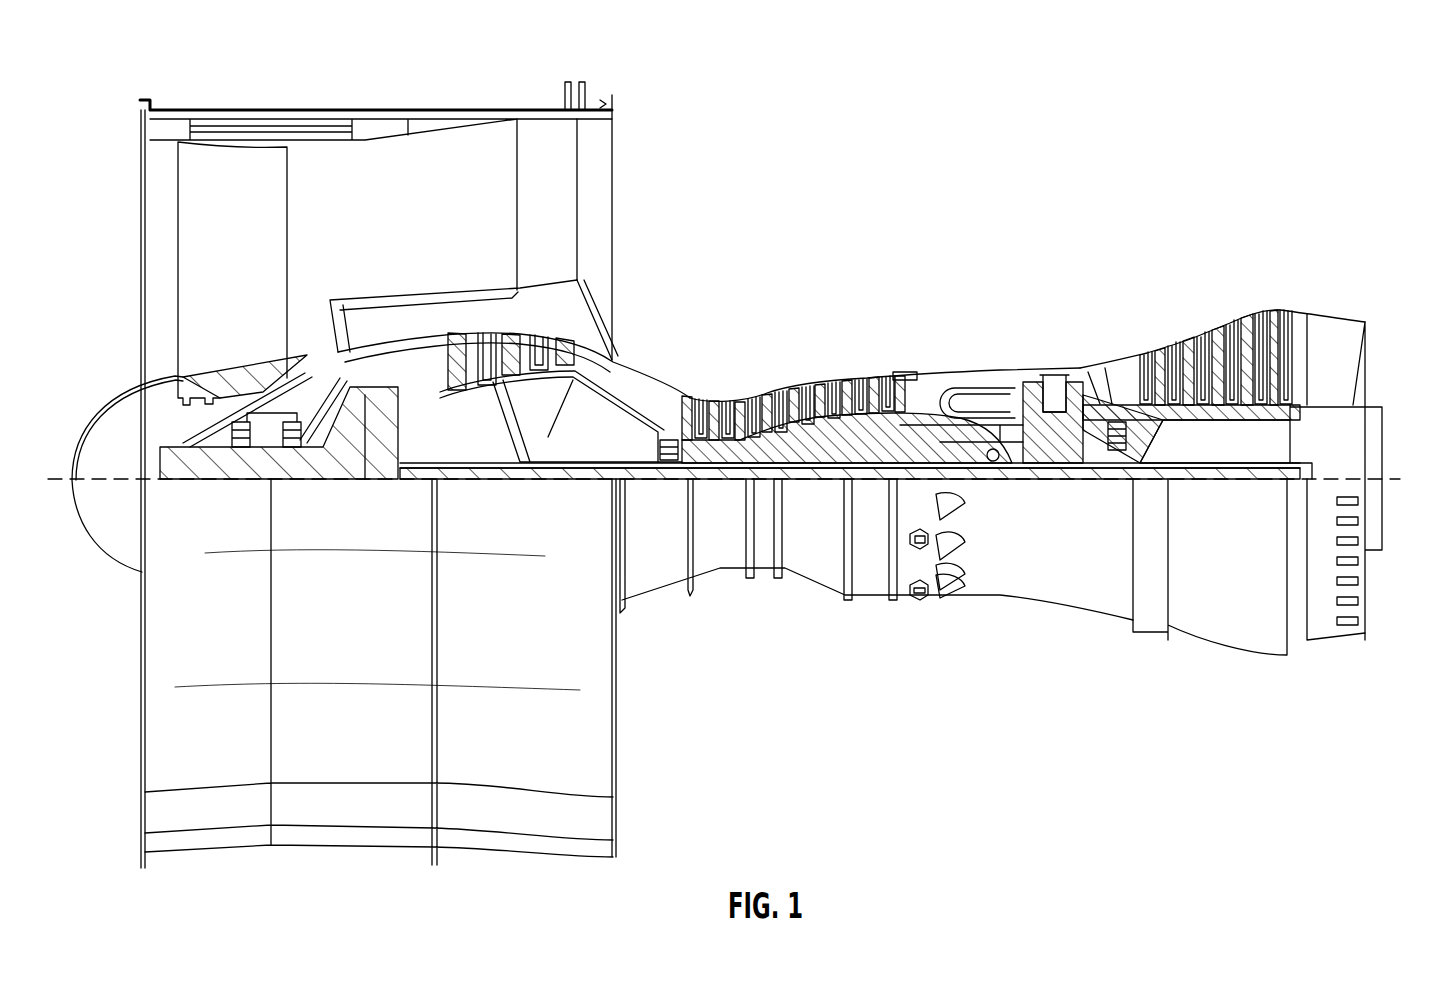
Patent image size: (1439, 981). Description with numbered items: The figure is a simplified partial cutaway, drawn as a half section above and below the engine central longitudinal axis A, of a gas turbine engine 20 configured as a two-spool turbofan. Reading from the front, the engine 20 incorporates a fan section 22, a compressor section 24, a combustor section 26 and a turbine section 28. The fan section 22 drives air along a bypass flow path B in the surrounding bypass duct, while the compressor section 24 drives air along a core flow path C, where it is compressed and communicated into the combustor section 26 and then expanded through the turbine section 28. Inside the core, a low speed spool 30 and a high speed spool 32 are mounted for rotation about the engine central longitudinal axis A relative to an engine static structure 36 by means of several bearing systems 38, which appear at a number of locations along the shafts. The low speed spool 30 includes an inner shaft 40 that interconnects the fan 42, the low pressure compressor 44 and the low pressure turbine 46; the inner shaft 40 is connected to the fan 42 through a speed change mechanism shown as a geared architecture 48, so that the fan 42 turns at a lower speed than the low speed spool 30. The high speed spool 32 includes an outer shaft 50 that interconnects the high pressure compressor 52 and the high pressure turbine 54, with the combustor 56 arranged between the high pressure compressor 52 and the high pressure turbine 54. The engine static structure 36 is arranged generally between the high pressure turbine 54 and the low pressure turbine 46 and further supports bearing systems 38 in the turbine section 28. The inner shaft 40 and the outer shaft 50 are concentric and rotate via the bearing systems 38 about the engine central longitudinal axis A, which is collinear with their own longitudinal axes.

The gas turbine engine 20 is at (1168, 88).
The fan section 22 is at (232, 102).
The compressor section 24 is at (723, 280).
The combustor section 26 is at (957, 280).
The turbine section 28 is at (1156, 280).
The low speed spool 30 is at (835, 483).
The high speed spool 32 is at (868, 440).
The engine static structure 36 is at (873, 597).
The bearing systems 38 is at (240, 450).
The inner shaft 40 is at (635, 490).
The fan 42 is at (243, 243).
The low pressure compressor 44 is at (530, 370).
The low pressure turbine 46 is at (1220, 325).
The geared architecture 48 is at (385, 466).
The outer shaft 50 is at (992, 462).
The high pressure compressor 52 is at (792, 445).
The high pressure turbine 54 is at (1048, 376).
The combustor 56 is at (976, 400).
The engine central longitudinal axis A is at (1390, 479).
The bypass flow path B is at (460, 228).
The core flow path C is at (334, 348).